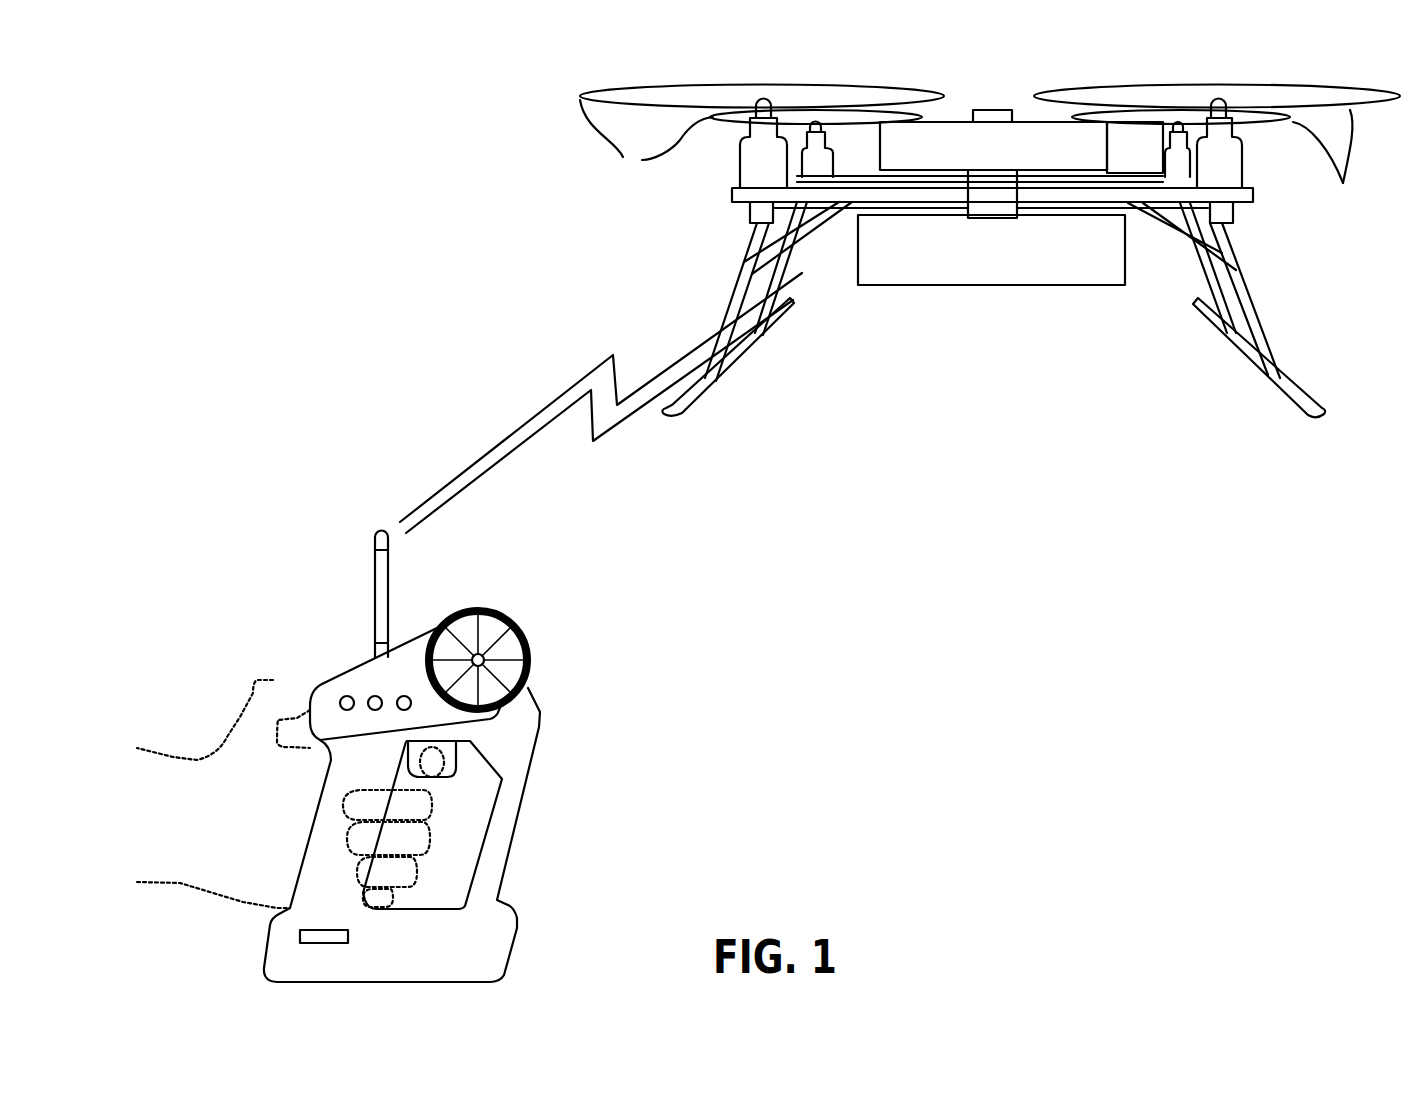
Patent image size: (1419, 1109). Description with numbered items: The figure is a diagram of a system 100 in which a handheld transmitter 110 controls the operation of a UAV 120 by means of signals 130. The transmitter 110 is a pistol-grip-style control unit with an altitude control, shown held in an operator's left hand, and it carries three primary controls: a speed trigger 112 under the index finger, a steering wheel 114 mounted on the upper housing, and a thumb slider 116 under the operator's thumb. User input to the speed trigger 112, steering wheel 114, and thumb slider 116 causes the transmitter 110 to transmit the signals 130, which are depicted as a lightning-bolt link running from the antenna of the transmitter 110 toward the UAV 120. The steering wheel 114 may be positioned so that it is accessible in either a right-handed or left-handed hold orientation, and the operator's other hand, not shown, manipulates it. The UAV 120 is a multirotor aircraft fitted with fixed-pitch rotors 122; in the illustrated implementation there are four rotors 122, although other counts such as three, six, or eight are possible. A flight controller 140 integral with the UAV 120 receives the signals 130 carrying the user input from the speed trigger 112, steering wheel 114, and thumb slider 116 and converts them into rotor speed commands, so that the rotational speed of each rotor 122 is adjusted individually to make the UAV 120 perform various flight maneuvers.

The system 100 is at (304, 93).
The transmitter 110 is at (550, 832).
The speed trigger 112 is at (456, 782).
The steering wheel 114 is at (525, 618).
The thumb slider 116 is at (323, 684).
The UAV 120 is at (1050, 336).
The rotors 122 is at (990, 152).
The signals 130 is at (557, 392).
The flight controller 140 is at (1012, 158).